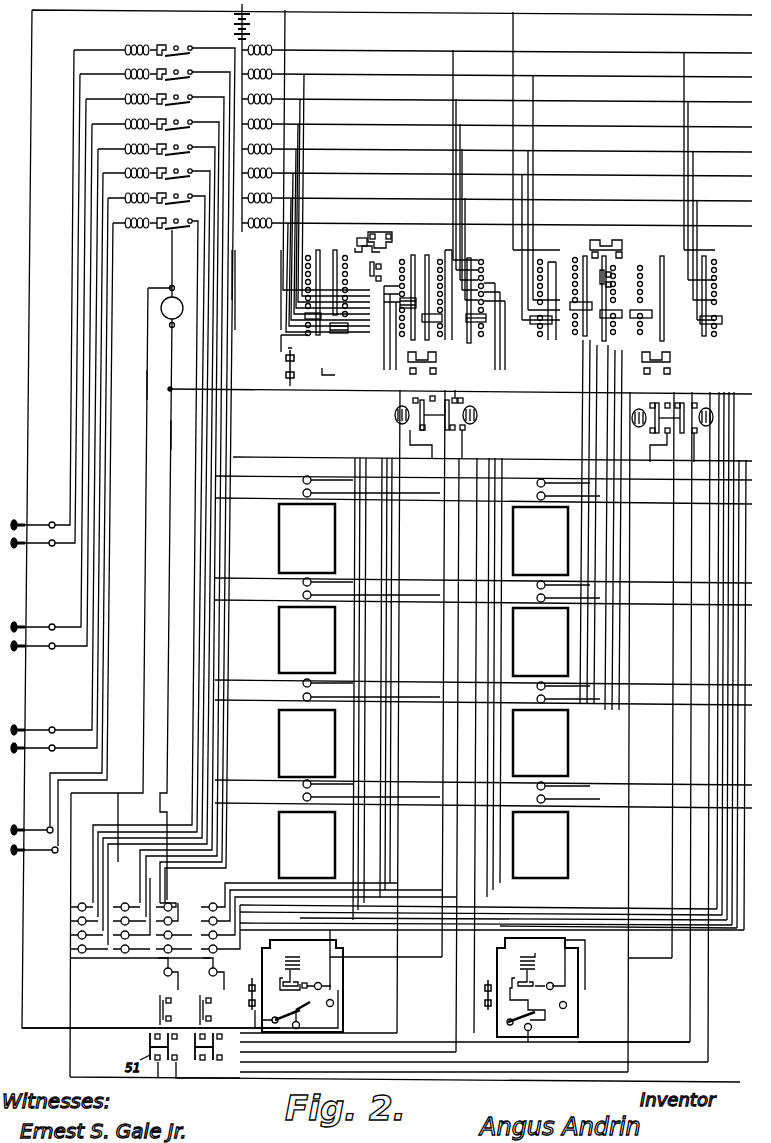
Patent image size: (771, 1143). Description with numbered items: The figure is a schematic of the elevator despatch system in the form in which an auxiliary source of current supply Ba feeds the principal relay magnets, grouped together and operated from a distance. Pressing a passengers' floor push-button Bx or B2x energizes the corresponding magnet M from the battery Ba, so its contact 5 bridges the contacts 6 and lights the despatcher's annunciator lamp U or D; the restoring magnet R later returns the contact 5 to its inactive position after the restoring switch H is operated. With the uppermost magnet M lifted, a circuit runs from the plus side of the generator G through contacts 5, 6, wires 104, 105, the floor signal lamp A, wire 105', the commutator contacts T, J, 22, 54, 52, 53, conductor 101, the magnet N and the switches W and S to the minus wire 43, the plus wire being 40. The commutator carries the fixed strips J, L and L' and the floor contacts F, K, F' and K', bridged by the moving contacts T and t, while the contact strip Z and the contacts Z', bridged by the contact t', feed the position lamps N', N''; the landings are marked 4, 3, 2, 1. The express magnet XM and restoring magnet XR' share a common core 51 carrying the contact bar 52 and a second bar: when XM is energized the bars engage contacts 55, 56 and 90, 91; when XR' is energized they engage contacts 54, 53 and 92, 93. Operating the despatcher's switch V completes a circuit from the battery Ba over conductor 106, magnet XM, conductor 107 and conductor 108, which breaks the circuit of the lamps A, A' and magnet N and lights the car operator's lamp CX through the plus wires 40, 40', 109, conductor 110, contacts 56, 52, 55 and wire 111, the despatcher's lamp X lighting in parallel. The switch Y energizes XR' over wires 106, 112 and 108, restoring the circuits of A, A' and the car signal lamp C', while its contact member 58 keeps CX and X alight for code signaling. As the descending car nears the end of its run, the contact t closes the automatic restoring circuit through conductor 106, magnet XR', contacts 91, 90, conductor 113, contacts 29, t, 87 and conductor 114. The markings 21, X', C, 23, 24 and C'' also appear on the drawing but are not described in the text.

The auxiliary source of current supply Ba is at (235, 19).
The relay magnet M is at (137, 141).
The restoring magnet R is at (258, 141).
The contact member 5 is at (182, 154).
The contacts 6 is at (176, 136).
The passengers' floor push-button switch Bx is at (59, 442).
The passengers' floor push-button switch B2x is at (62, 472).
The generator G is at (127, 565).
The plus wire 40 is at (130, 385).
The minus wire 43 is at (182, 435).
The conductor 108 is at (92, 10).
The wire 111 is at (290, 390).
The conductor 113 is at (322, 380).
The floor contacts F' is at (310, 287).
The movable contact t is at (307, 317).
The fixed strip contact L' is at (336, 272).
The movable contact T is at (342, 334).
The floor contacts K' is at (363, 240).
The contact 21 is at (380, 232).
The restoring switch H is at (381, 269).
The floor contacts K is at (394, 305).
The fixed strip contact J is at (408, 289).
The floor contacts F is at (433, 290).
The fixed strip contact L is at (442, 285).
The contact strip Z is at (476, 290).
The contacts Z' is at (493, 310).
The movable contact t' is at (471, 330).
The contact 22 is at (430, 358).
The restoring magnet XR' is at (381, 415).
The express magnet XM is at (470, 410).
The contact 92 is at (422, 408).
The contact 90 is at (432, 395).
The contact 54 is at (455, 396).
The contact 55 is at (462, 402).
The contact 93 is at (424, 428).
The contact 53 is at (447, 430).
The contact 56 is at (466, 428).
The contact 91 is at (430, 444).
The contact bar 52 is at (490, 410).
The common core 51 is at (482, 422).
The switch S is at (288, 366).
The contact 87 is at (296, 343).
The contact 29 is at (302, 371).
The wire 104 is at (232, 278).
The conductor 106 is at (235, 303).
The conductor 114 is at (280, 322).
The wire 105 is at (483, 468).
The wire 105' is at (483, 490).
The floor signal lamp A is at (393, 626).
The floor signal lamp A' is at (401, 644).
The conductor 110 is at (440, 510).
The conductor 101 is at (440, 538).
The conductor 107 is at (445, 552).
The wire 112 is at (392, 620).
The indicator 4 is at (307, 538).
The indicator 3 is at (307, 640).
The indicator 2 is at (307, 743).
The indicator 1 is at (307, 845).
The despatcher's annunciator lamp U is at (89, 919).
The despatcher's annunciator lamp D is at (131, 915).
The signal lamp N' is at (174, 919).
The signal lamp N'' is at (220, 911).
The plus wire 40' is at (140, 963).
The despatcher's lamp X is at (161, 974).
The contact X' is at (207, 974).
The despatcher's signaling switch V is at (160, 1005).
The despatcher's push button switch Y is at (148, 1042).
The contact member 58 is at (162, 1078).
The car signal lamp C' is at (310, 986).
The plus wire 109 is at (297, 940).
The magnet N is at (286, 975).
The contact C is at (316, 977).
The car operator's signal lamp CX is at (334, 1002).
The switch W is at (303, 1003).
The contact 23 is at (286, 1014).
The contact 24 is at (300, 1024).
The controller C'' is at (593, 990).